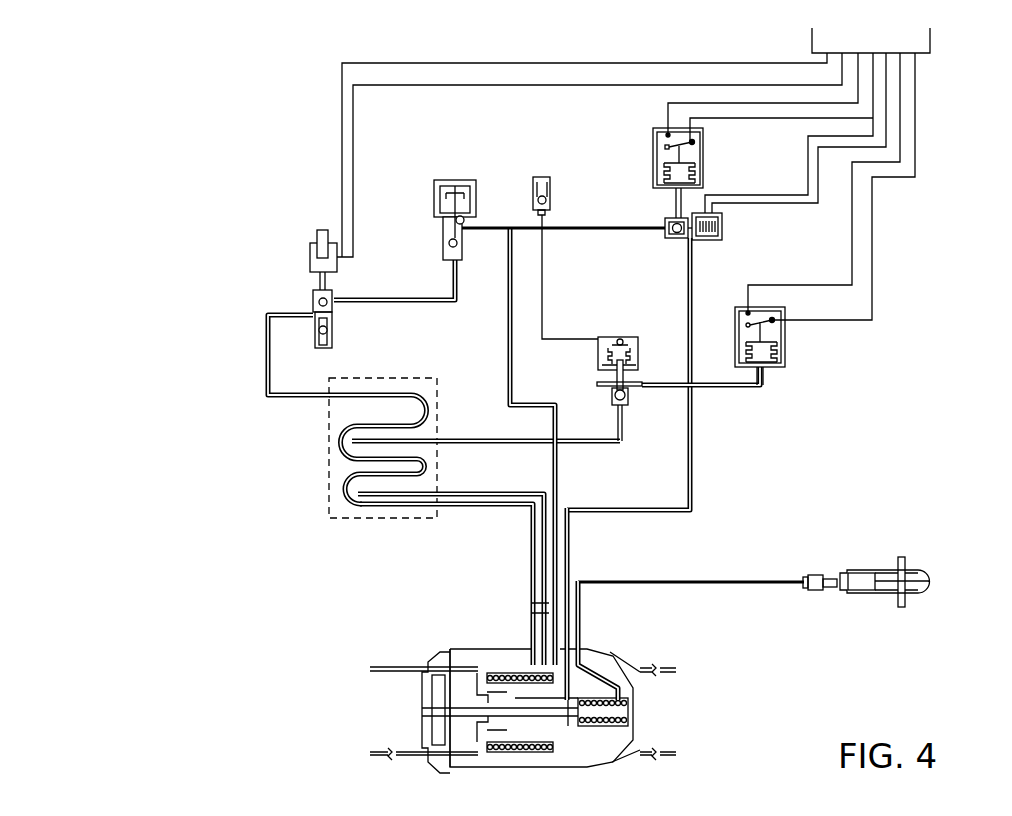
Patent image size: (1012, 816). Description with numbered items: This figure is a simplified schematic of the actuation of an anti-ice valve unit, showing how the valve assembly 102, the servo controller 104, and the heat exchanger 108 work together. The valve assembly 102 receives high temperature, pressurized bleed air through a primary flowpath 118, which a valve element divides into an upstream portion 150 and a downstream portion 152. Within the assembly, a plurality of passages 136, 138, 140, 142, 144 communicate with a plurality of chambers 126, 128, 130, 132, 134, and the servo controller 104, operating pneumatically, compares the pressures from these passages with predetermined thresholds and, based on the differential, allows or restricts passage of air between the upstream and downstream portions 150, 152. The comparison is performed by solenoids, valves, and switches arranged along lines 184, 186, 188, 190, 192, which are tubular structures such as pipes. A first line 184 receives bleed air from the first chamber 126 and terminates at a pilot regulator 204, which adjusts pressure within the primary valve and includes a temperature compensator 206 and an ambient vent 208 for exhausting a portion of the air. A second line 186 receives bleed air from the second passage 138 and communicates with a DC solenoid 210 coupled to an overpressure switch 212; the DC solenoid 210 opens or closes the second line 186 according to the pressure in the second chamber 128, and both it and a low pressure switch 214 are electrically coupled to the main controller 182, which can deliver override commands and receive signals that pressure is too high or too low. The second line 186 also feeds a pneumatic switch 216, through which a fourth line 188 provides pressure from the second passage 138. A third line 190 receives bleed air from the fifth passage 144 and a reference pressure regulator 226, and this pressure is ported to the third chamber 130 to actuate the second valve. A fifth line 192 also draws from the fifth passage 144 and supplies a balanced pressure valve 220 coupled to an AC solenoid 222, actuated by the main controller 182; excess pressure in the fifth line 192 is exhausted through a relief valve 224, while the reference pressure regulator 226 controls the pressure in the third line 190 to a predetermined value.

The valve assembly 102 is at (374, 634).
The servo controller 104 is at (152, 172).
The heat exchanger 108 is at (390, 378).
The primary flowpath 118 is at (662, 703).
The first chamber 126 is at (610, 712).
The second chamber 128 is at (571, 720).
The third chamber 130 is at (527, 693).
The fourth chamber 132 is at (514, 754).
The fifth chamber 134 is at (466, 650).
The first passage 136 is at (580, 598).
The second passage 138 is at (569, 545).
The third passage 140 is at (548, 588).
The fourth passage 142 is at (541, 560).
The fifth passage 144 is at (531, 530).
The upstream portion 150 is at (655, 755).
The downstream portion 152 is at (392, 754).
The main controller 182 is at (932, 42).
The first line 184 is at (725, 582).
The second line 186 is at (692, 433).
The fourth line 188 is at (485, 438).
The third line 190 is at (509, 366).
The fifth line 192 is at (268, 368).
The pilot regulator 204 is at (818, 592).
The temperature compensator 206 is at (858, 573).
The ambient vent 208 is at (932, 580).
The DC solenoid 210 is at (724, 230).
The overpressure switch 212 is at (654, 160).
The low pressure switch 214 is at (786, 342).
The pneumatic switch 216 is at (613, 336).
The balanced pressure valve 220 is at (312, 299).
The AC solenoid 222 is at (310, 250).
The relief valve 224 is at (544, 177).
The reference pressure regulator 226 is at (455, 180).